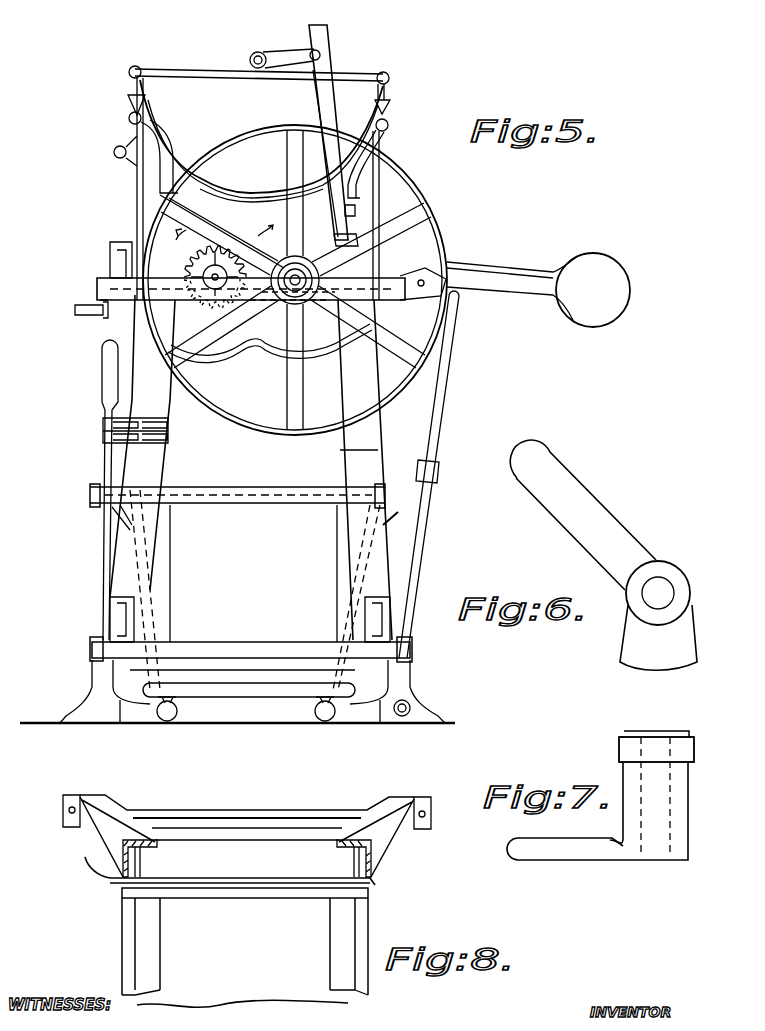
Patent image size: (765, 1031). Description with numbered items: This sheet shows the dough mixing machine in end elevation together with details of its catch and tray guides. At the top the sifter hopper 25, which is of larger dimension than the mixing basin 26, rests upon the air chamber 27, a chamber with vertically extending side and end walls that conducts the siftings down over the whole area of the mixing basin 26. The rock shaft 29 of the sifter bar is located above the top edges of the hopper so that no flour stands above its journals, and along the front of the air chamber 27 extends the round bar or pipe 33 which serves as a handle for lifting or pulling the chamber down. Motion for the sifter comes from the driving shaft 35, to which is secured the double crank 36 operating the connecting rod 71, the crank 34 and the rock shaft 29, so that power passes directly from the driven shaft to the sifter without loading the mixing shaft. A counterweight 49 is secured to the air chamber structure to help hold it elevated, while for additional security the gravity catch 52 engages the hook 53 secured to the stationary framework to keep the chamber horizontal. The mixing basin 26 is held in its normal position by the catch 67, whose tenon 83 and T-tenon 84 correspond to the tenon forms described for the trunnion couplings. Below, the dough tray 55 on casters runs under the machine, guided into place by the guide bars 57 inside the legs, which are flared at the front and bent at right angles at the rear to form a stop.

In FIG. 5, the sifter hopper 25 is at (259, 142).
In FIG. 5, the mixing basin 26 is at (226, 348).
In FIG. 5, the air chamber 27 is at (137, 203).
In FIG. 5, the rock shaft 29 is at (250, 57).
In FIG. 5, the round bar or pipe 33 is at (114, 151).
In FIG. 5, the crank 34 is at (280, 54).
In FIG. 5, the driving shaft 35 is at (280, 262).
In FIG. 5, the double crank 36 is at (371, 239).
In FIG. 5, the counterweight 49 is at (614, 295).
In FIG. 5, the gravity catch 52 is at (110, 255).
In FIG. 5, the hook 53 is at (97, 279).
In FIG. 5, the dough tray 55 is at (255, 590).
In FIG. 8, the dough tray 55 is at (245, 947).
In FIG. 5, the guide bars 57 is at (261, 490).
In FIG. 8, the guide bars 57 is at (107, 882).
In FIG. 5, the catch 67 is at (108, 318).
In FIG. 6, the catch 67 is at (603, 562).
In FIG. 7, the catch 67 is at (614, 805).
In FIG. 5, the connecting rod 71 is at (322, 100).
In FIG. 6, the tenon 83 is at (580, 486).
In FIG. 7, the tenon 83 is at (588, 852).
In FIG. 6, the T-tenon 84 is at (630, 648).
In FIG. 7, the T-tenon 84 is at (628, 752).